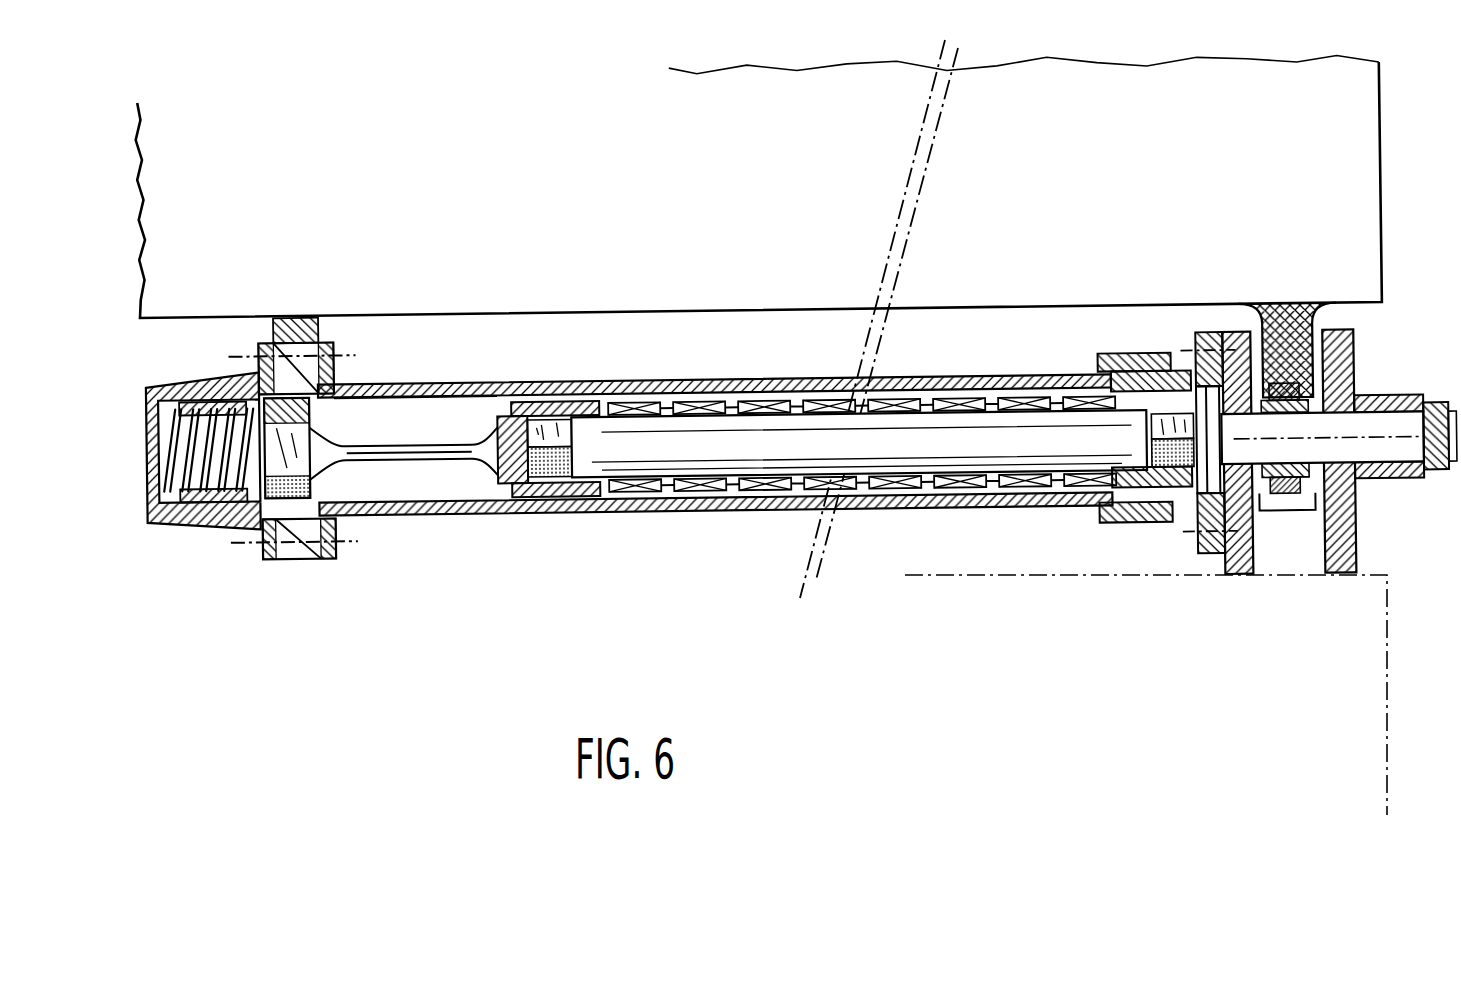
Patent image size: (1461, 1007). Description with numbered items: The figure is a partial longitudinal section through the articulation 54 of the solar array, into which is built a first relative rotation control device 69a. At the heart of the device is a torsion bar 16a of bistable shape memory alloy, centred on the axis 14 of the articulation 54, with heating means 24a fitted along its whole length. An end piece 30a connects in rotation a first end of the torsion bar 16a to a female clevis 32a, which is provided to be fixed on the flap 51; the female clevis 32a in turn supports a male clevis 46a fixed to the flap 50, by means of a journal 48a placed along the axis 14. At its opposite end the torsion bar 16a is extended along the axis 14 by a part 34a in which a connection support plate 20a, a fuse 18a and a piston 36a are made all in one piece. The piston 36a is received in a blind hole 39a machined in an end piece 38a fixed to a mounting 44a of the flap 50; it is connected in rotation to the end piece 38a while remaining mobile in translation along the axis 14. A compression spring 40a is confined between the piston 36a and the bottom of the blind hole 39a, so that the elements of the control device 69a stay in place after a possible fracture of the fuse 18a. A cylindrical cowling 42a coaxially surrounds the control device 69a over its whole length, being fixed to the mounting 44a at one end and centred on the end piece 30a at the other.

The axis 14 is at (1457, 443).
The torsion bar 16a is at (900, 450).
The fuse 18a is at (380, 448).
The connection support plate 20a is at (490, 466).
The heating means 24a is at (1077, 482).
The end piece 30a is at (1183, 512).
The female clevis 32a is at (1340, 508).
The part 34a is at (452, 412).
The piston 36a is at (280, 458).
The end piece 38a is at (218, 380).
The blind hole 39a is at (163, 400).
The compression spring 40a is at (178, 520).
The cylindrical cowling 42a is at (737, 502).
The mounting 44a is at (290, 558).
The male clevis 46a is at (1280, 517).
The journal 48a is at (1378, 425).
The flap 50 is at (1355, 160).
The flap 51 is at (1388, 723).
The articulation 54 is at (1373, 345).
The first relative rotation control device 69a is at (666, 495).